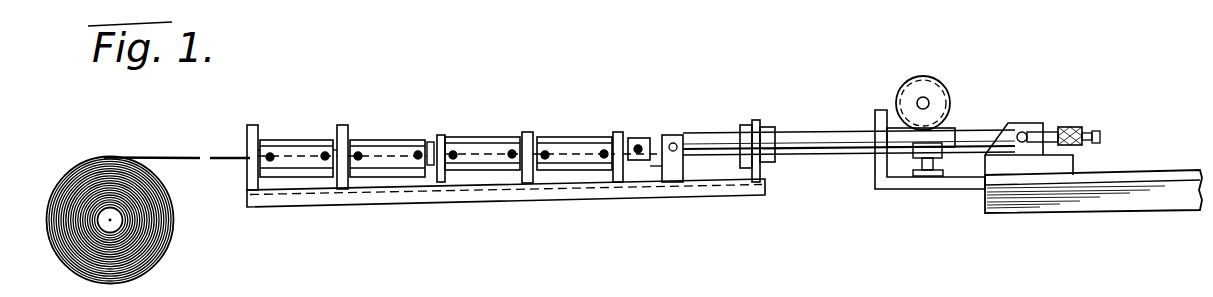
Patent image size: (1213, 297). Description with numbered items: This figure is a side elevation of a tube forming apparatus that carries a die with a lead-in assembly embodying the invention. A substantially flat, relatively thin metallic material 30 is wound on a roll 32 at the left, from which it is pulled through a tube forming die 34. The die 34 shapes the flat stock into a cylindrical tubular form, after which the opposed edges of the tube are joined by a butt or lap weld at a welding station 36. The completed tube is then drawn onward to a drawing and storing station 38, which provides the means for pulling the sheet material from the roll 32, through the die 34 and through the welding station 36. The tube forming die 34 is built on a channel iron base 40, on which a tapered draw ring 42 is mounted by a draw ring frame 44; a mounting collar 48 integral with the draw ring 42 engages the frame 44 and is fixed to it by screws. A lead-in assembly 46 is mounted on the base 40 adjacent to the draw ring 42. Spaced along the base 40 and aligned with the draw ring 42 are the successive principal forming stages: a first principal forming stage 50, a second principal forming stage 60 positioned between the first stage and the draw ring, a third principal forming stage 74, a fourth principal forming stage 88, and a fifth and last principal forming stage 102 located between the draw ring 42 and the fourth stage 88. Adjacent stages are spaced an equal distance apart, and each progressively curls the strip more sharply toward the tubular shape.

The metallic material 30 is at (174, 156).
The roll 32 is at (155, 245).
The tube forming die 34 is at (688, 124).
The welding station 36 is at (907, 78).
The drawing and storing station 38 is at (1037, 118).
The channel iron base 40 is at (670, 192).
The tapered draw ring 42 is at (767, 127).
The draw ring frame 44 is at (760, 172).
The lead-in assembly 46 is at (453, 134).
The mounting collar 48 is at (745, 125).
The first principal forming stage 50 is at (258, 122).
The second principal forming stage 60 is at (344, 122).
The third principal forming stage 74 is at (429, 134).
The fourth principal forming stage 88 is at (530, 131).
The fifth principal forming stage 102 is at (622, 130).